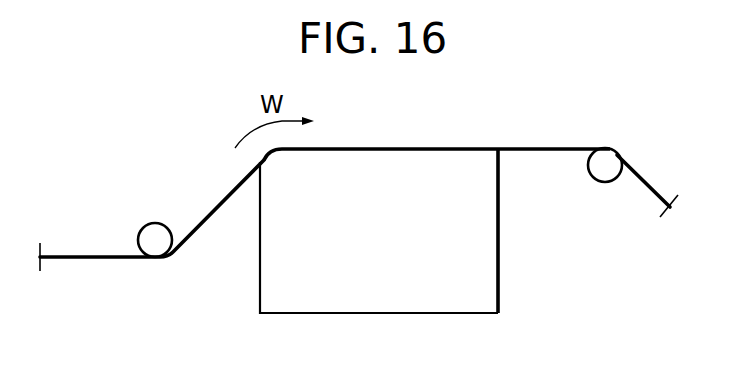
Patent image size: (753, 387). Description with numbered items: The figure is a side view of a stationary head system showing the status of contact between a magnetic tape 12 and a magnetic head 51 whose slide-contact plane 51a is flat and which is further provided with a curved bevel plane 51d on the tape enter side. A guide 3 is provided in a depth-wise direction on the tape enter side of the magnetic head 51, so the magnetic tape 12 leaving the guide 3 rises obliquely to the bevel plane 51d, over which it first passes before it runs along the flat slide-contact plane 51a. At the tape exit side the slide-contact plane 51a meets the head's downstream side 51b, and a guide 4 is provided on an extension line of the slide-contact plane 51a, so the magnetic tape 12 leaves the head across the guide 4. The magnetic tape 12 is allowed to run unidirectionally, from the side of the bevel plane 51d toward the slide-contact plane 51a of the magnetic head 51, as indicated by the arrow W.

The guide 3 is at (153, 234).
The guide 4 is at (605, 160).
The magnetic tape 12 is at (210, 213).
The magnetic head 51 is at (485, 272).
The slide-contact plane 51a is at (397, 147).
The downstream side wall of suction box 51b is at (498, 146).
The bevel plane 51d is at (266, 157).